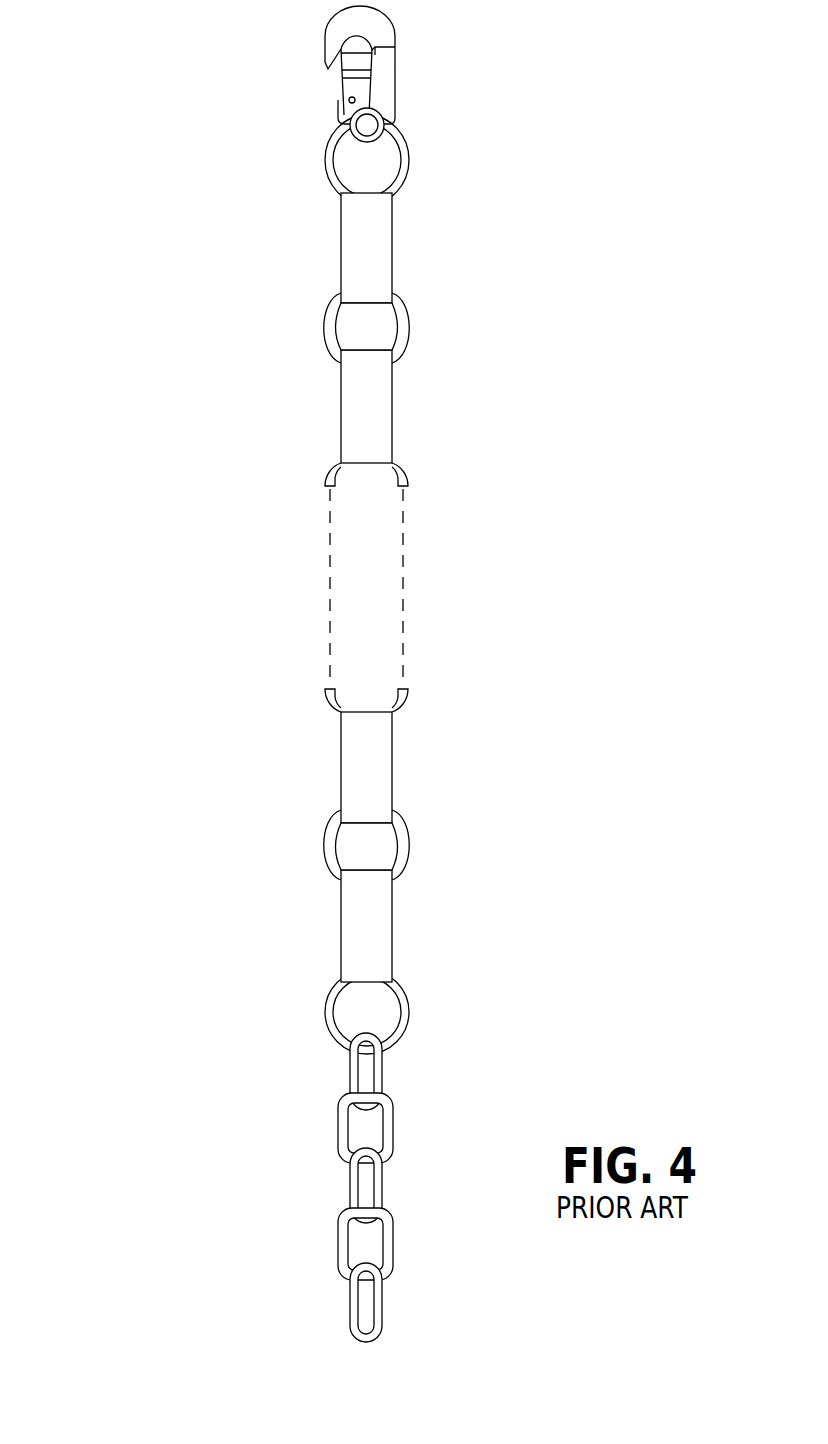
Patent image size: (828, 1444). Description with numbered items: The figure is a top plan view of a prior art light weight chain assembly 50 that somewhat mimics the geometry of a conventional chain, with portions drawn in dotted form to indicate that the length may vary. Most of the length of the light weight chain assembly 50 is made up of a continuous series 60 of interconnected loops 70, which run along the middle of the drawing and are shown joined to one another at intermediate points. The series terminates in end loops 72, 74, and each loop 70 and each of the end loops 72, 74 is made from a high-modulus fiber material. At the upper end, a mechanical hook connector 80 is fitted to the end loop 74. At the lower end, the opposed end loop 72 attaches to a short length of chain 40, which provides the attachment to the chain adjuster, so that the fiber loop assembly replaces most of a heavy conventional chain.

The short length of chain 40 is at (385, 1133).
The light weight chain assembly 50 is at (162, 333).
The continuous series of interconnected loops 60 is at (403, 422).
The interconnected loop 70 is at (341, 405).
The end loop 72 is at (326, 1009).
The end loop 74 is at (407, 145).
The mechanical hook connector 80 is at (385, 73).